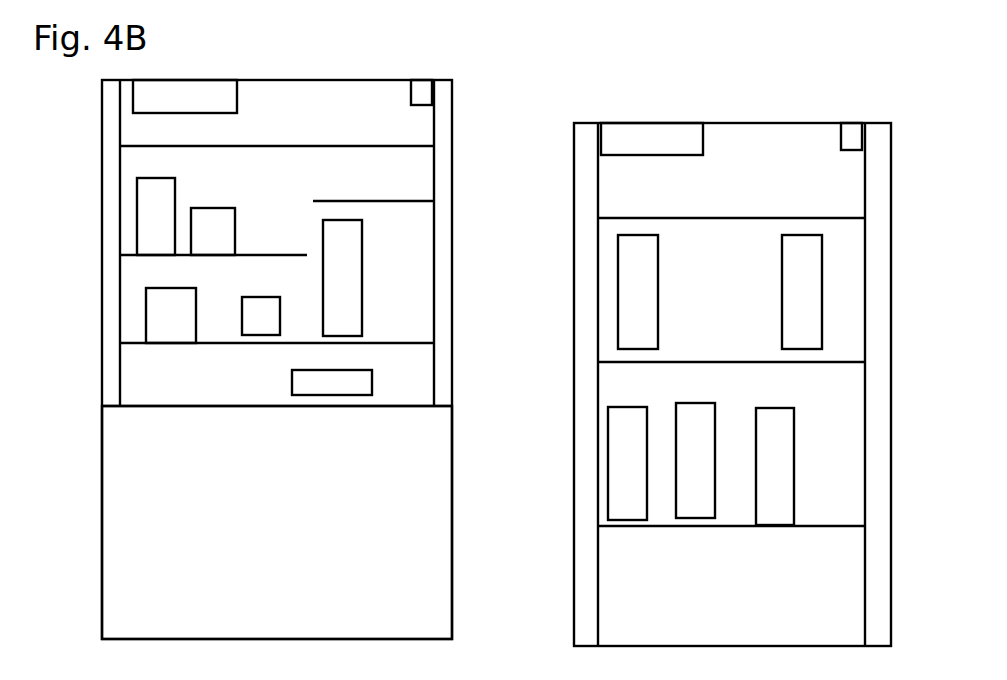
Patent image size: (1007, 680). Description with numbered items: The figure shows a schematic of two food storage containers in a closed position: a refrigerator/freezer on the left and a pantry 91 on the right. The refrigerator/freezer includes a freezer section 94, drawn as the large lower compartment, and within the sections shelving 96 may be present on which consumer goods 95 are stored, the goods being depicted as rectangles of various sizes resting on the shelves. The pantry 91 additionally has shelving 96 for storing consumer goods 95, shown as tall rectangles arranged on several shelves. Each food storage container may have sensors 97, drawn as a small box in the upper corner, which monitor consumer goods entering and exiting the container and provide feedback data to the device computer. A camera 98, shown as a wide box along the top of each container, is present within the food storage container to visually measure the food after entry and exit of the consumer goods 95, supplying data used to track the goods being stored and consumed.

The pantry 91 is at (752, 118).
The freezer section 94 is at (420, 528).
The consumer goods 95 is at (160, 214).
The shelving 96 is at (322, 146).
The sensors 97 is at (423, 95).
The camera 98 is at (175, 100).